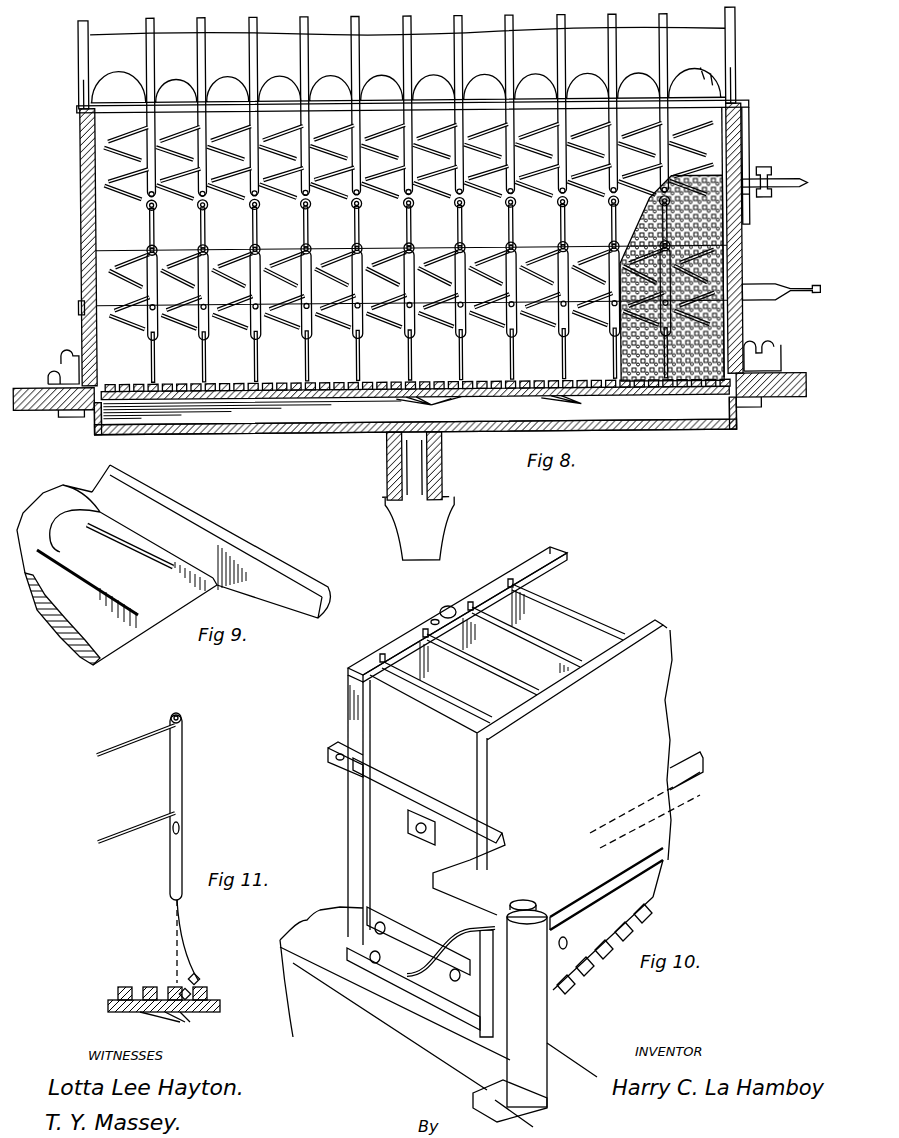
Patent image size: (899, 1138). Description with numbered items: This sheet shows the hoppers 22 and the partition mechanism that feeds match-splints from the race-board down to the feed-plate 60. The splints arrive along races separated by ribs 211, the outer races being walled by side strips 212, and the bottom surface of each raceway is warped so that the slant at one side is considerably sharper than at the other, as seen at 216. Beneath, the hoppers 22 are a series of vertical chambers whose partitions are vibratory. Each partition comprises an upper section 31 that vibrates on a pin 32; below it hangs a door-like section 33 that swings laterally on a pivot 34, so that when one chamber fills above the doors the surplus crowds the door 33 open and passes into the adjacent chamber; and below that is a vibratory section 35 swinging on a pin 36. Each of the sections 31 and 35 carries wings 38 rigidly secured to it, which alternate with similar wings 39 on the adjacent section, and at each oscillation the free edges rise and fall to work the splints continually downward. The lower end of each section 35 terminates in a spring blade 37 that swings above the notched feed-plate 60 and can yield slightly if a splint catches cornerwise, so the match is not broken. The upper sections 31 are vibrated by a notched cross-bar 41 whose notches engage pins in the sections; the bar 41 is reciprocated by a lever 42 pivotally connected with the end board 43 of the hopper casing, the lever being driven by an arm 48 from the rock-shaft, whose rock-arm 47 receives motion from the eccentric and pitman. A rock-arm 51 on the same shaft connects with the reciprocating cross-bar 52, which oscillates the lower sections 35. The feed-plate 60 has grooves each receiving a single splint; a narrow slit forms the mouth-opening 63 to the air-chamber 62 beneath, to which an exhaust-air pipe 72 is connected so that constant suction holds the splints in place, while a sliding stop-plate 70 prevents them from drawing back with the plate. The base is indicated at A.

In FIG. 8, the hoppers 22 is at (84, 170).
In FIG. 10, the hoppers 22 is at (595, 815).
In FIG. 8, the upper section 31 is at (156, 145).
In FIG. 10, the upper section 31 is at (487, 653).
In FIG. 8, the pin 32 is at (148, 205).
In FIG. 8, the door-like section 33 is at (156, 235).
In FIG. 8, the pivot 34 is at (308, 207).
In FIG. 8, the vibratory section 35 is at (148, 260).
In FIG. 11, the vibratory section 35 is at (185, 795).
In FIG. 8, the pin 36 is at (260, 247).
In FIG. 11, the pin 36 is at (181, 715).
In FIG. 8, the blade 37 is at (355, 360).
In FIG. 11, the blade 37 is at (188, 945).
In FIG. 8, the wings 38 is at (413, 234).
In FIG. 11, the wings 38 is at (128, 740).
In FIG. 8, the wings 39 is at (407, 251).
In FIG. 8, the cross-bar 41 is at (210, 100).
In FIG. 10, the cross-bar 41 is at (395, 637).
In FIG. 8, the lever 42 is at (776, 180).
In FIG. 10, the lever 42 is at (385, 783).
In FIG. 8, the end board 43 is at (744, 247).
In FIG. 10, the end board 43 is at (548, 1025).
In FIG. 10, the rock-arm 47 is at (438, 1037).
In FIG. 10, the arm 48 is at (490, 900).
In FIG. 10, the rock-arm 51 is at (416, 968).
In FIG. 8, the cross-bar 52 is at (78, 305).
In FIG. 10, the cross-bar 52 is at (458, 940).
In FIG. 8, the feed-plate 60 is at (482, 380).
In FIG. 11, the feed-plate 60 is at (128, 987).
In FIG. 8, the air-chamber 62 is at (415, 416).
In FIG. 8, the mouth-opening 63 is at (497, 406).
In FIG. 11, the mouth-opening 63 is at (171, 1022).
In FIG. 10, the sliding stop-plate 70 is at (606, 921).
In FIG. 8, the exhaust-air pipe 72 is at (447, 490).
In FIG. 8, the rib 211 is at (206, 33).
In FIG. 8, the side strips 212 is at (89, 36).
In FIG. 9, the side strips 212 is at (211, 541).
In FIG. 8, the warped bottom surface 216 is at (128, 92).
In FIG. 9, the warped bottom surface 216 is at (165, 566).
In FIG. 8, the base A is at (50, 404).
In FIG. 10, the base A is at (321, 972).